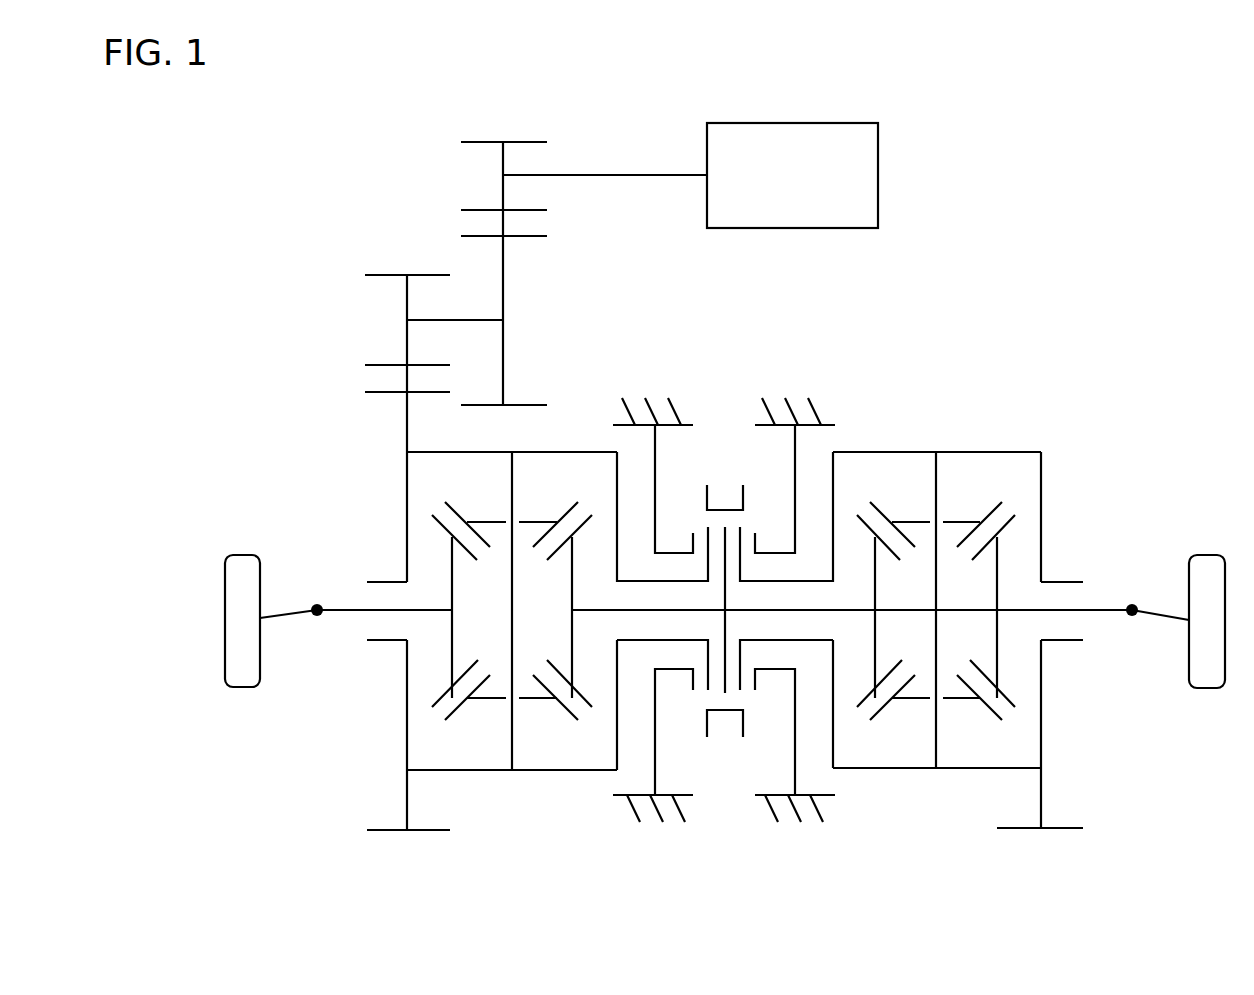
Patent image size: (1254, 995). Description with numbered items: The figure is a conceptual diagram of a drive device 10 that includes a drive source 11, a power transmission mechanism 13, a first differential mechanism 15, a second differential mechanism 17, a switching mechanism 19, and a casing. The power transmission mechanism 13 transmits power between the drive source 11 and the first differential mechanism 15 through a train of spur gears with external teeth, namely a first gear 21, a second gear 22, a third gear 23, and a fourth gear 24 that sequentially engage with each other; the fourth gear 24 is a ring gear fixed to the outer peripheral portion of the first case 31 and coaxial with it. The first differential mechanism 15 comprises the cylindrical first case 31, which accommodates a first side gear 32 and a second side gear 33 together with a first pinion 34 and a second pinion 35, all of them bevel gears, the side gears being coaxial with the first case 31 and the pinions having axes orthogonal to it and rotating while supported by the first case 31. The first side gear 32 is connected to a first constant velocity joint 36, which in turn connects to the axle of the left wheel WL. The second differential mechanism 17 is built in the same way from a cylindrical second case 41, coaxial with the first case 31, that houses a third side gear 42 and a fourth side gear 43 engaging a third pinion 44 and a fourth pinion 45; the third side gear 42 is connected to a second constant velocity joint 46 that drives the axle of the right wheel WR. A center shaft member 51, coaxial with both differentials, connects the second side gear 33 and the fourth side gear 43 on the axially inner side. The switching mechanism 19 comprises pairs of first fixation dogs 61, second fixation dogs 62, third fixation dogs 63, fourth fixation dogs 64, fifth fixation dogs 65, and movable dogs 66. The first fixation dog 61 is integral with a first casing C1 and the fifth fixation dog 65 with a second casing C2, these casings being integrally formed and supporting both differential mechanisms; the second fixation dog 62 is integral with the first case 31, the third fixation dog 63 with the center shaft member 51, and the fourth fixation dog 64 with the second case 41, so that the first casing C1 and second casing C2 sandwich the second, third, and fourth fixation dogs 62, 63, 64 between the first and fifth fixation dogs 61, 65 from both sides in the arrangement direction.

The drive device 10 is at (1088, 92).
The drive source 11 is at (878, 143).
The power transmission mechanism 13 is at (344, 149).
The first differential mechanism 15 is at (620, 348).
The second differential mechanism 17 is at (850, 358).
The switching mechanism 19 is at (720, 334).
The first gear 21 is at (461, 142).
The second gear 22 is at (461, 236).
The third gear 23 is at (365, 275).
The fourth gear 24 is at (365, 392).
The first case 31 is at (548, 452).
The first side gear 32 is at (450, 655).
The second side gear 33 is at (560, 700).
The first pinion 34 is at (485, 522).
The second pinion 35 is at (480, 700).
The first constant velocity joint 36 is at (316, 604).
The second case 41 is at (990, 452).
The third side gear 42 is at (997, 655).
The fourth side gear 43 is at (875, 655).
The third pinion 44 is at (965, 521).
The fourth pinion 45 is at (957, 700).
The second constant velocity joint 46 is at (1132, 604).
The center shaft member 51 is at (850, 606).
The first fixation dog 61 is at (693, 533).
The second fixation dog 62 is at (708, 527).
The third fixation dog 63 is at (725, 527).
The fourth fixation dog 64 is at (740, 527).
The fifth fixation dog 65 is at (755, 533).
The movable dog 66 is at (722, 508).
The first casing C1 is at (628, 795).
The second casing C2 is at (822, 795).
The left wheel WL is at (240, 554).
The right wheel WR is at (1210, 554).